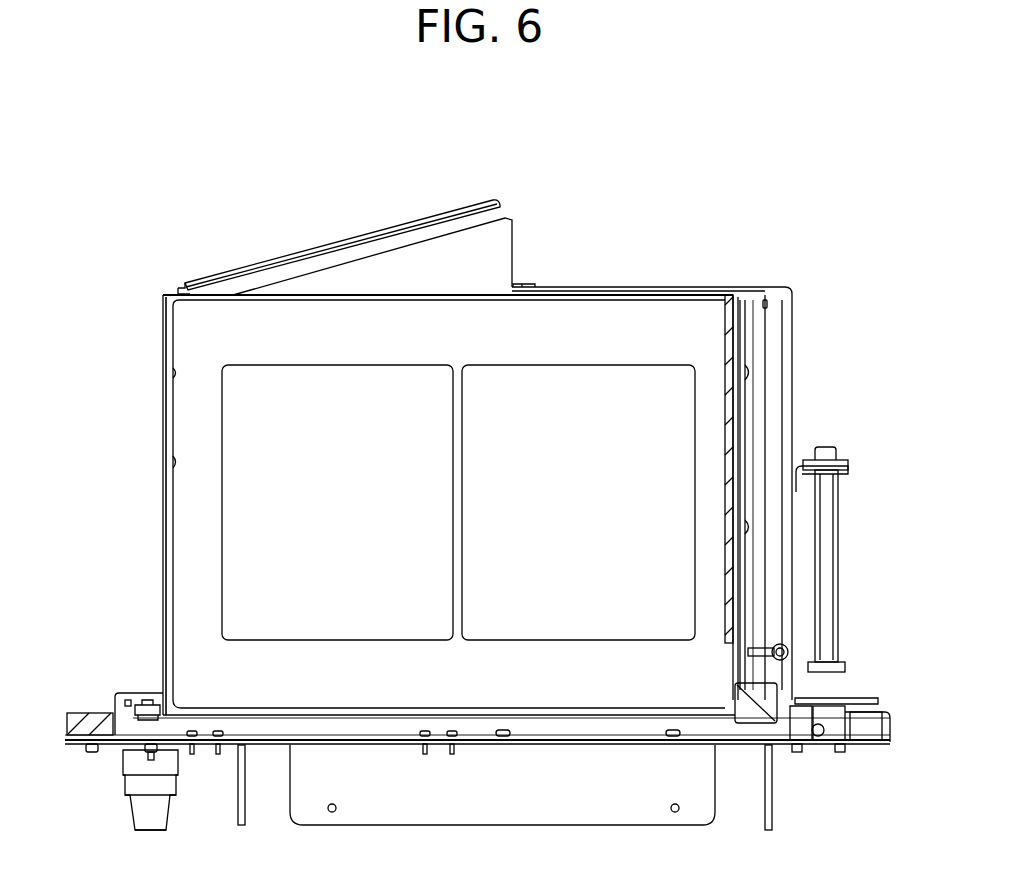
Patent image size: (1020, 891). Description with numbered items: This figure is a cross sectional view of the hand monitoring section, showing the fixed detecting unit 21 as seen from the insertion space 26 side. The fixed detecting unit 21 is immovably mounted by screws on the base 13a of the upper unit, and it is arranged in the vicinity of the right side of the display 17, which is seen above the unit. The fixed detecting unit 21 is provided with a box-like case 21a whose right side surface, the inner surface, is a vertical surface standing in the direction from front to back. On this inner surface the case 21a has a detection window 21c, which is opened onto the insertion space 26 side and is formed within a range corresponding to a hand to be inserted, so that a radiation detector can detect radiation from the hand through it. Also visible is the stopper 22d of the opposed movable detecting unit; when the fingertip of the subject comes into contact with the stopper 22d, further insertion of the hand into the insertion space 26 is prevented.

The base 13a is at (614, 745).
The display 17 is at (358, 235).
The fixed detecting unit 21 is at (664, 272).
The case 21a is at (580, 317).
The detection window 21c is at (226, 478).
The stopper 22d is at (728, 350).
The insertion space 26 is at (338, 441).